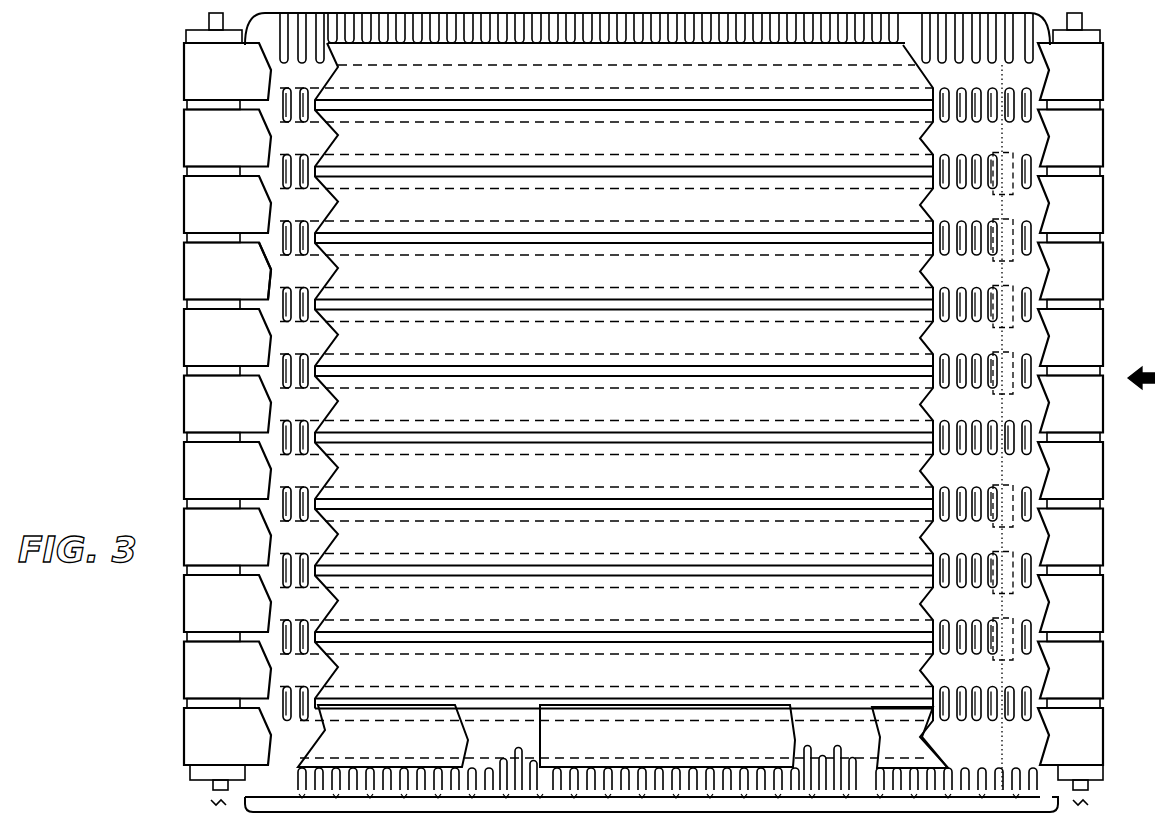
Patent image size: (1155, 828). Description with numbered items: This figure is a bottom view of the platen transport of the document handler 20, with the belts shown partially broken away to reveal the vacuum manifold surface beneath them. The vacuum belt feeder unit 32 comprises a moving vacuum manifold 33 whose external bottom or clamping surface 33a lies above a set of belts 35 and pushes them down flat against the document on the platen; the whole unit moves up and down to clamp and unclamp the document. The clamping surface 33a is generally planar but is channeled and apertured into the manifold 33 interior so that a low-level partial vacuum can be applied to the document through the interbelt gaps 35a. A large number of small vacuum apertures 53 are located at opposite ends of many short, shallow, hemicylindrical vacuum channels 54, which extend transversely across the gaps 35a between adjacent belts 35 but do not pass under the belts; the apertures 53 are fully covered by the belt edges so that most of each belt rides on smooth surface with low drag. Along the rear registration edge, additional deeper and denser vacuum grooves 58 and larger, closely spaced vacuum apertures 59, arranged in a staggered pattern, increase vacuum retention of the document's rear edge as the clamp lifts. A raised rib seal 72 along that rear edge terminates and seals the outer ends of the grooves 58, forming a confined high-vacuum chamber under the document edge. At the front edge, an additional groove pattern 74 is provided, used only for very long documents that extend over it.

The document handler 20 is at (143, 96).
The vacuum belt feeder unit 32 is at (153, 207).
The vacuum manifold 33 is at (290, 264).
The bottom or clamping surface 33a is at (297, 272).
The belts 35 is at (198, 343).
The interbelt gaps 35a is at (363, 702).
The vacuum apertures 53 is at (960, 623).
The vacuum channels 54 is at (977, 378).
The rear edge vacuum grooves 58 is at (838, 747).
The rear edge vacuum apertures 59 is at (530, 757).
The rib seal 72 is at (1062, 793).
The front edge groove pattern 74 is at (622, 33).